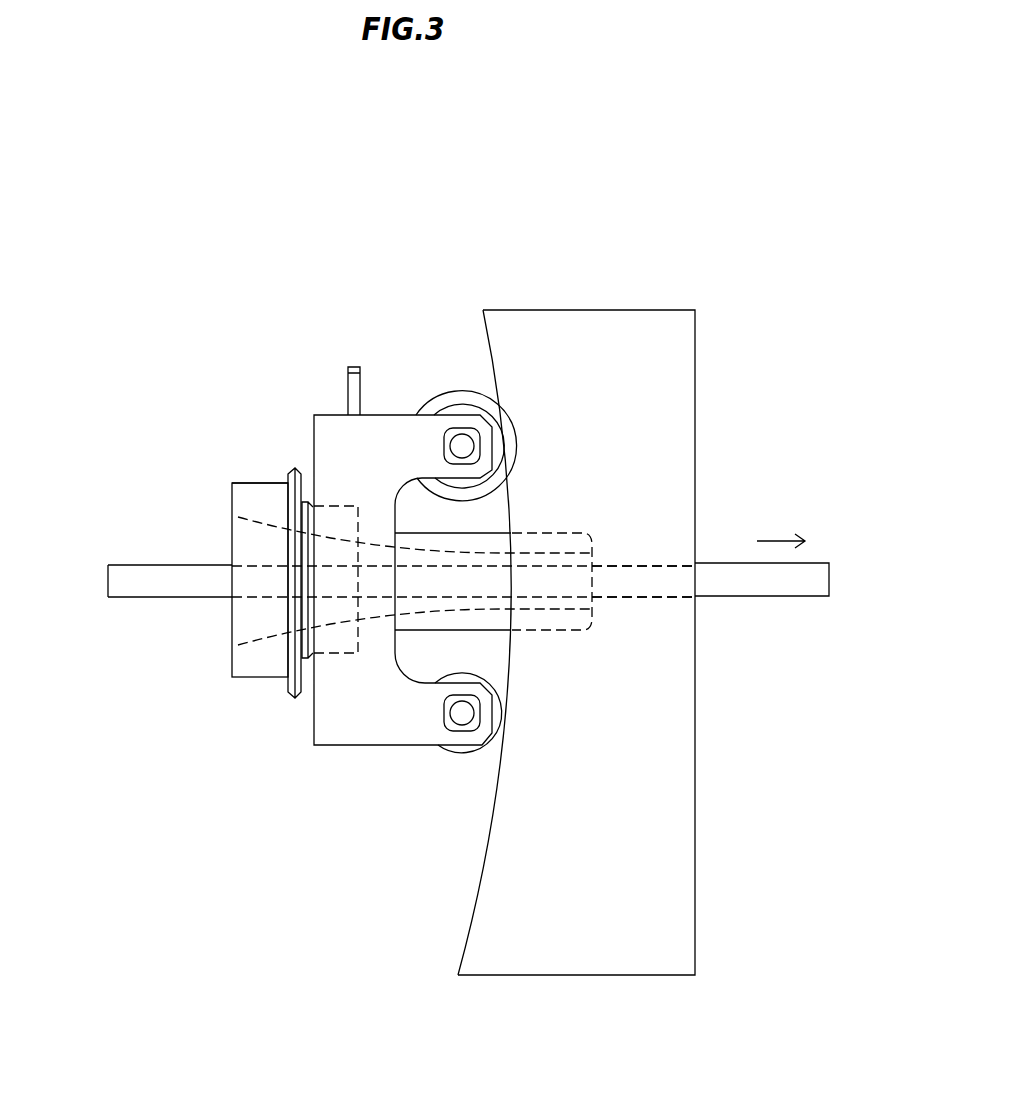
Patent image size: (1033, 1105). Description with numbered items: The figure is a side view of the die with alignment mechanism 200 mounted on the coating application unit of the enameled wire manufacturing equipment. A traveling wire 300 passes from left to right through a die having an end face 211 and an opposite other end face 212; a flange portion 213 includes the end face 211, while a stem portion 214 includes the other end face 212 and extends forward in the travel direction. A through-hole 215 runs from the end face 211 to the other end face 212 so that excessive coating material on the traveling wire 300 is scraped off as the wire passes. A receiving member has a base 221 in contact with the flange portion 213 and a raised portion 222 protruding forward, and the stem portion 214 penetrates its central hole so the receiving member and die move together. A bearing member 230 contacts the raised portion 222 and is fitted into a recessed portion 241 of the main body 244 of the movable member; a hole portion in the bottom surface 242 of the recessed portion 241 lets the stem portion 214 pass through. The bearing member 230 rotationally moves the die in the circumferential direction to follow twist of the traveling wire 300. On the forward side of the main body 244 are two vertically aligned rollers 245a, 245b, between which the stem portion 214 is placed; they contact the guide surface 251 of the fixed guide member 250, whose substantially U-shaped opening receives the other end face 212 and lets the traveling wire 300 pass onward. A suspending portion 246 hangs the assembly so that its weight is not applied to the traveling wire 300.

The die with alignment mechanism 200 is at (430, 204).
The end face 211 is at (230, 502).
The other end face 212 is at (590, 545).
The flange portion 213 is at (253, 483).
The stem portion 214 is at (532, 533).
The through-hole 215 is at (240, 620).
The base 221 is at (295, 465).
The raised portion 222 is at (308, 658).
The bearing member 230 is at (342, 518).
The recessed portion 241 is at (350, 653).
The bottom surface 242 is at (353, 635).
The main body 244 is at (400, 415).
The roller 245a is at (447, 393).
The roller 245b is at (445, 755).
The suspending portion 246 is at (353, 367).
The guide member 250 is at (625, 975).
The guide surface 251 is at (473, 908).
The traveling wire 300 is at (120, 565).